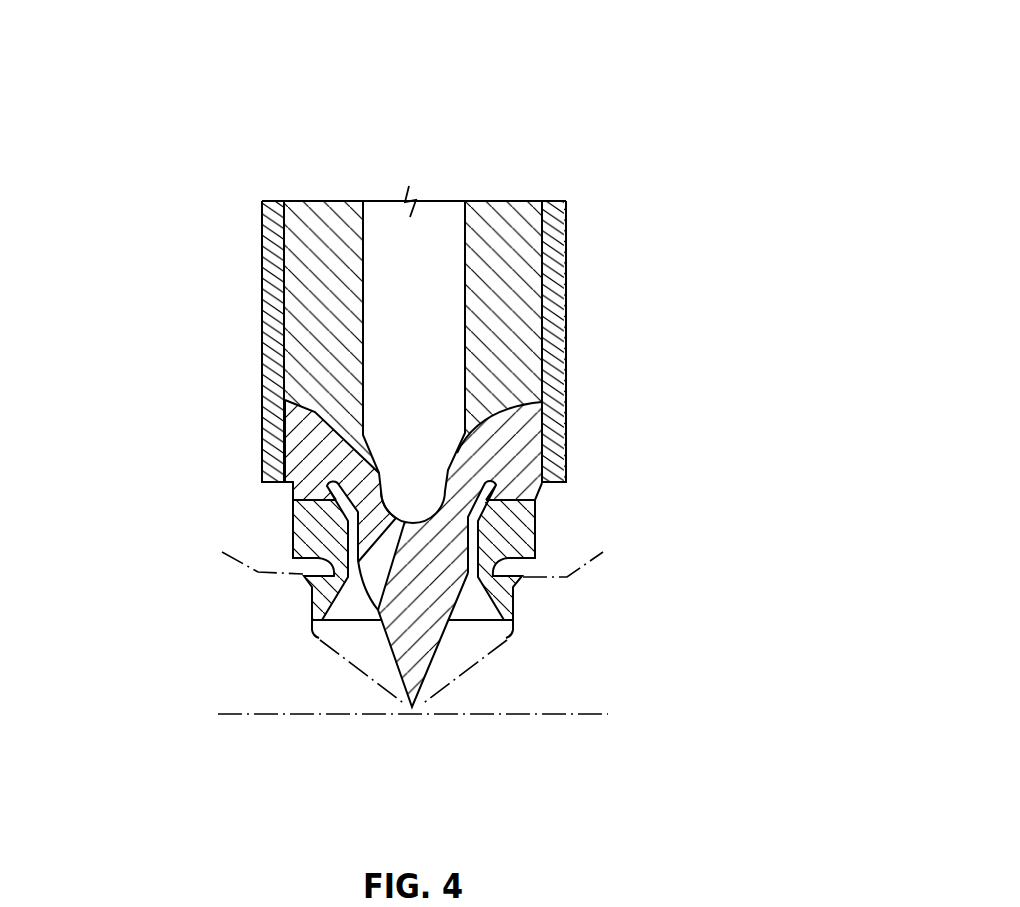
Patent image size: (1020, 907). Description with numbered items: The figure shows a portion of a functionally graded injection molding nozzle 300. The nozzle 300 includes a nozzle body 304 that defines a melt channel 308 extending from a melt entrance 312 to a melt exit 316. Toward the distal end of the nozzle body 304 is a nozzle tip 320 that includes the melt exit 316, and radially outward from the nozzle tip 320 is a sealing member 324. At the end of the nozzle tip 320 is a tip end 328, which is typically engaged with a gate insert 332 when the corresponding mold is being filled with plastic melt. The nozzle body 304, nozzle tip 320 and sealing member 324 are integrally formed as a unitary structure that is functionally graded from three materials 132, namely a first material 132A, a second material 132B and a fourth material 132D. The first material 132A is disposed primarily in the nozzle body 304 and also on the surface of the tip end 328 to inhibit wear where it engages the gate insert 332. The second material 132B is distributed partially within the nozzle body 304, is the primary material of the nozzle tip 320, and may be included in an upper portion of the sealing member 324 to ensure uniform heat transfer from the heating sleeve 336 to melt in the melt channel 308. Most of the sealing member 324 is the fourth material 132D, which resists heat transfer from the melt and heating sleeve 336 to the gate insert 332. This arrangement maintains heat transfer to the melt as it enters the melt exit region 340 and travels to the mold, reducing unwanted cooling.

The nozzle 300 is at (627, 106).
The nozzle body 304 is at (551, 236).
The melt channel 308 is at (429, 183).
The melt entrance 312 is at (374, 198).
The melt exit 316 is at (352, 618).
The nozzle tip 320 is at (236, 586).
The sealing member 324 is at (535, 523).
The tip end 328 is at (434, 671).
The gate insert 332 is at (498, 645).
The heating sleeve 336 is at (277, 320).
The melt exit region 340 is at (359, 680).
The materials 132 is at (557, 470).
The first material 132A is at (523, 332).
The second material 132B is at (308, 447).
The fourth material 132D is at (507, 543).